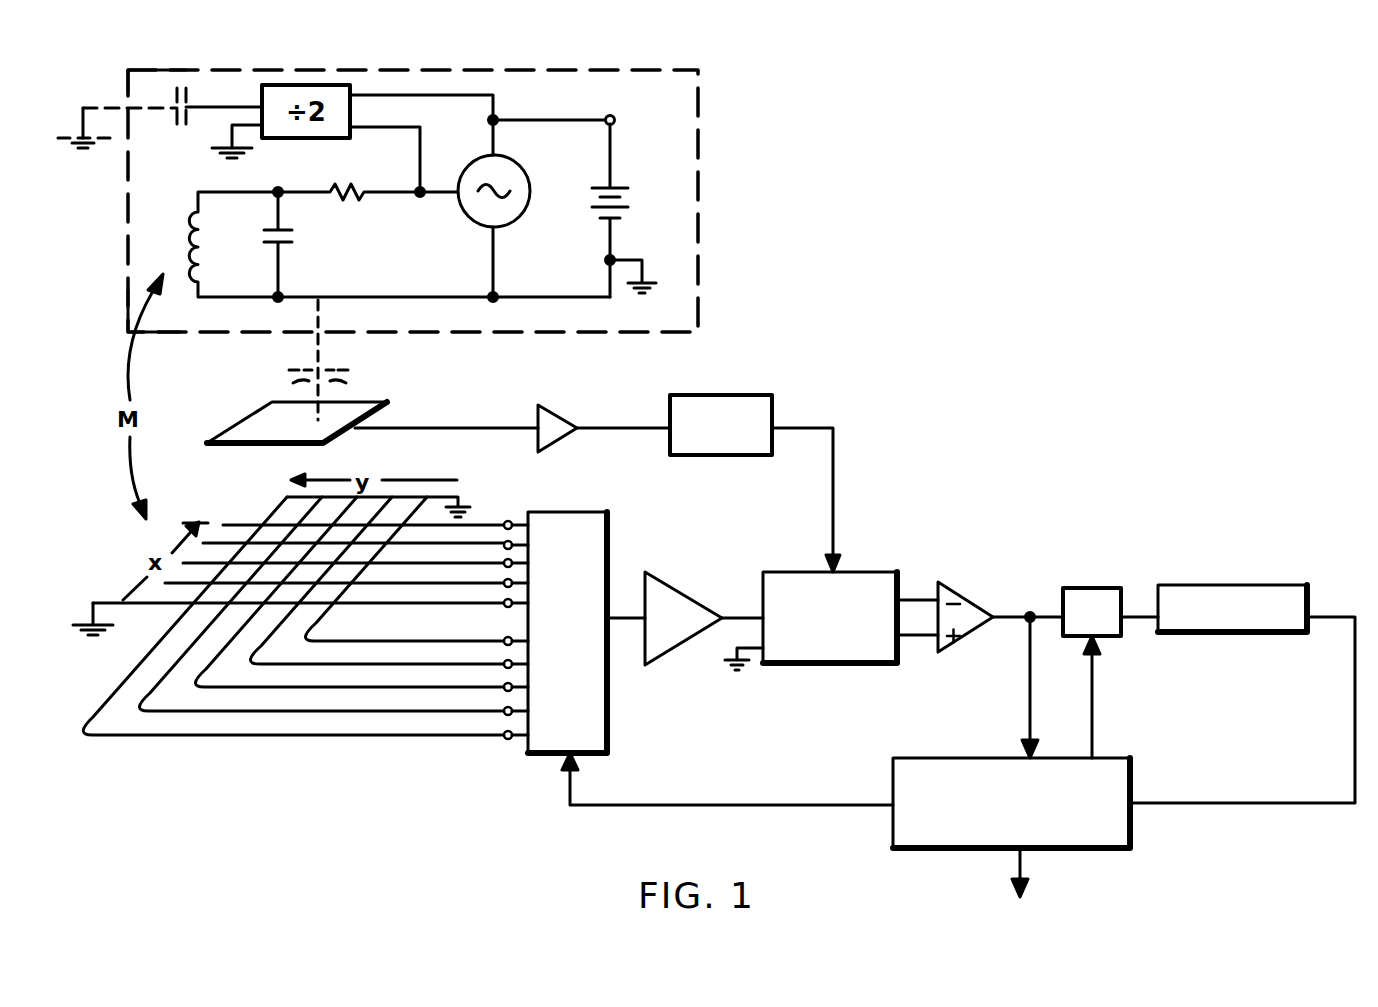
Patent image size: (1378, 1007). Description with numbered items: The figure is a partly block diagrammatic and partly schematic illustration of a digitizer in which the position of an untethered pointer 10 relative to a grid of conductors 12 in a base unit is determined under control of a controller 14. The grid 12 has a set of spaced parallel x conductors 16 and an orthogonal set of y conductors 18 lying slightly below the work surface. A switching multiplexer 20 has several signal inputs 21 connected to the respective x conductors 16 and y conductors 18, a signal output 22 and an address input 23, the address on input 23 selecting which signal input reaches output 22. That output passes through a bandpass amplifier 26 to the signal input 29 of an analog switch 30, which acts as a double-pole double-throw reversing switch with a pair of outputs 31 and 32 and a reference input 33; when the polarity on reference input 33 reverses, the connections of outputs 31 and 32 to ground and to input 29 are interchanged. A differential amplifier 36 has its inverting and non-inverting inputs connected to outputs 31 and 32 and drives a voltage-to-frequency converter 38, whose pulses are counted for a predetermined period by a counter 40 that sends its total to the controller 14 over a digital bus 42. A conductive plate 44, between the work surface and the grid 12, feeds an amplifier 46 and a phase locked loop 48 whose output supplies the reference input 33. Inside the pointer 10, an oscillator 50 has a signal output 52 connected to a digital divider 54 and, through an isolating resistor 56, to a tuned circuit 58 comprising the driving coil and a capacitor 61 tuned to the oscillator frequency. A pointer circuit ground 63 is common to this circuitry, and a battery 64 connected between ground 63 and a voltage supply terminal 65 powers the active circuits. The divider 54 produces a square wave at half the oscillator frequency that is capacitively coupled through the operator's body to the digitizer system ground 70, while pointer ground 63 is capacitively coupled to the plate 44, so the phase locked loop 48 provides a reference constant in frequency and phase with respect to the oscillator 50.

The untethered pointer 10 is at (698, 122).
The grid of conductors 12 is at (310, 592).
The controller 14 is at (948, 757).
The x conductors 16 is at (455, 525).
The y conductors 18 is at (228, 645).
The switching multiplexer 20 is at (607, 695).
The signal inputs 21 is at (504, 736).
The signal output 22 is at (616, 612).
The address input 23 is at (582, 758).
The bandpass amplifier 26 is at (680, 590).
The signal input 29 is at (760, 614).
The analog switch 30 is at (862, 571).
The output 31 is at (918, 596).
The output 32 is at (916, 640).
The reference input 33 is at (826, 568).
The differential amplifier 36 is at (968, 596).
The voltage-to-frequency converter 38 is at (1090, 586).
The counter 40 is at (1222, 568).
The digital bus 42 is at (1202, 802).
The conductive plate 44 is at (386, 398).
The amplifier 46 is at (558, 405).
The phase locked loop 48 is at (720, 394).
The oscillator 50 is at (522, 168).
The signal output 52 is at (436, 200).
The digital divider 54 is at (258, 98).
The isolating resistor 56 is at (350, 200).
The tuned circuit 58 is at (233, 244).
The capacitor 61 is at (284, 244).
The pointer circuit ground 63 is at (226, 140).
The battery 64 is at (620, 185).
The voltage supply terminal 65 is at (614, 116).
The digitizer system ground 70 is at (80, 110).